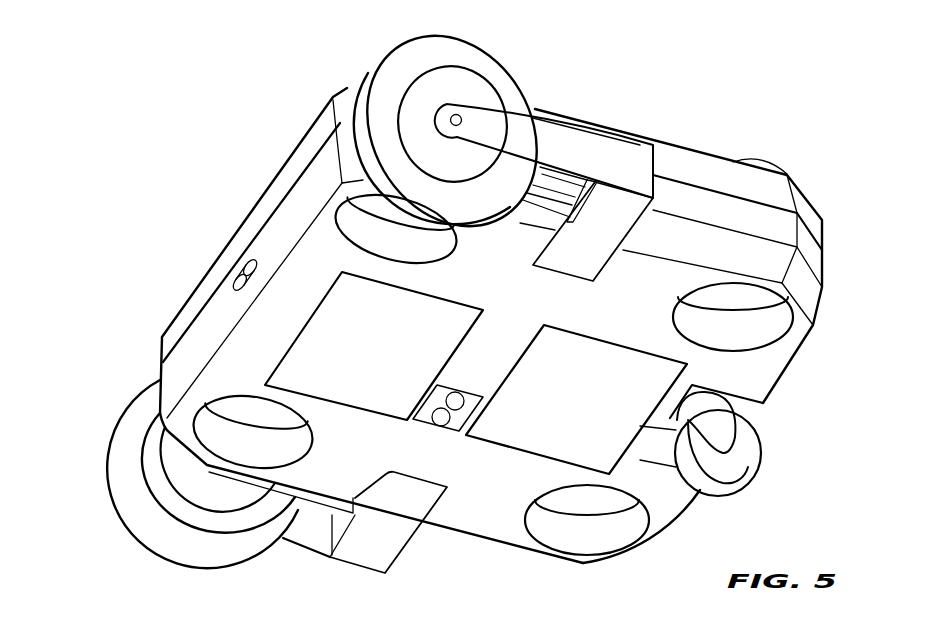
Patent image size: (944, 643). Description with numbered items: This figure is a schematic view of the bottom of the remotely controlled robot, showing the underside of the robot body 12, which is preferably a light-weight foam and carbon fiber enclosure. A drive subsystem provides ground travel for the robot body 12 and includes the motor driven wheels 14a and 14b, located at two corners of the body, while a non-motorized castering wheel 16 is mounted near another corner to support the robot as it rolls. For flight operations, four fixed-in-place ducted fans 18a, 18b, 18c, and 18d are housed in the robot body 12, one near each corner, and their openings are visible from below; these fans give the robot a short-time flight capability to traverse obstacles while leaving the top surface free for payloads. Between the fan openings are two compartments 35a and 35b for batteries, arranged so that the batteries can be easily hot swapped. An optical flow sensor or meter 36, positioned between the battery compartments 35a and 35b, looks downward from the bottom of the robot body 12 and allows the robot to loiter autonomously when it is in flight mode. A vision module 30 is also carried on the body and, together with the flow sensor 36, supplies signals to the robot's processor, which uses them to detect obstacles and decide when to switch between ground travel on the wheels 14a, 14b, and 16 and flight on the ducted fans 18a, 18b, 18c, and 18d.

The robot body 12 is at (808, 205).
The motor driven wheel 14a is at (449, 50).
The motor driven wheel 14b is at (183, 539).
The castering wheel 16 is at (747, 448).
The ducted fan 18a is at (362, 237).
The ducted fan 18b is at (760, 323).
The ducted fan 18c is at (569, 525).
The ducted fan 18d is at (213, 432).
The vision module 30 is at (233, 280).
The battery compartment 35a is at (374, 346).
The battery compartment 35b is at (576, 399).
The optical flow sensor 36 is at (440, 426).